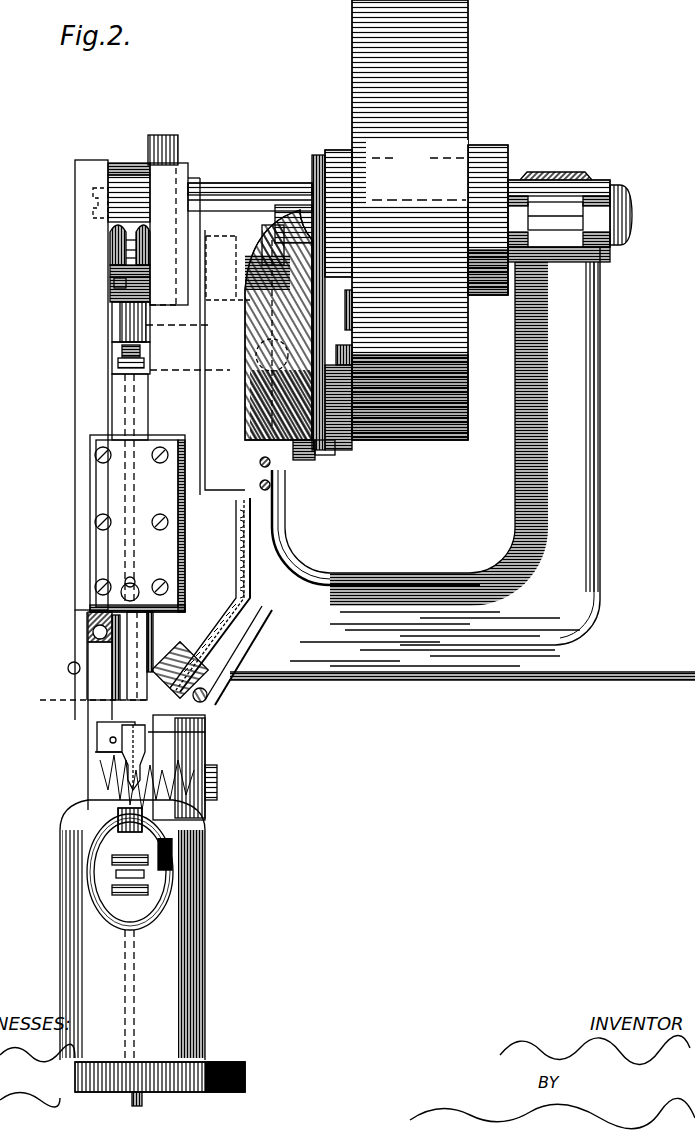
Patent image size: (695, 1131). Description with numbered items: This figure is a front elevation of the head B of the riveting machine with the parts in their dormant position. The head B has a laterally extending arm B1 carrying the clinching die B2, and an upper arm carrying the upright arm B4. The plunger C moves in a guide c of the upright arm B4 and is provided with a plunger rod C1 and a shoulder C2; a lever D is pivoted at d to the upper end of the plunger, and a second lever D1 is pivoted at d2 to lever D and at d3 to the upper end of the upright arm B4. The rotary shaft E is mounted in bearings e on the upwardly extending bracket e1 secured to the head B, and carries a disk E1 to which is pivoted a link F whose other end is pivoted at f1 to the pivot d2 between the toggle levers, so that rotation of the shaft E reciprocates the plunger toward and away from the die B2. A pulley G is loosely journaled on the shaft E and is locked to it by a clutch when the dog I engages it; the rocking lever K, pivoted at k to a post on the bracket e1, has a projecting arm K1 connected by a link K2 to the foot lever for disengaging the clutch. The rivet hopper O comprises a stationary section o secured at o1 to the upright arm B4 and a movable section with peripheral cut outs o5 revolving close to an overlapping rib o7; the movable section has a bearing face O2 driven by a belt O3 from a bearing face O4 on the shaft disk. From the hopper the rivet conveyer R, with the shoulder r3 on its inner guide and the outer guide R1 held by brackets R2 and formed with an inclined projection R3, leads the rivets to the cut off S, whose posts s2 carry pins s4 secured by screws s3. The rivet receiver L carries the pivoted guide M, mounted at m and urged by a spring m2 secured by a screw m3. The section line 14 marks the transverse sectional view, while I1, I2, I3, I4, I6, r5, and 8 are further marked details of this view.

The pulley G is at (440, 182).
The bearings e is at (288, 184).
The rotary shaft E is at (626, 222).
The disk E1 is at (178, 135).
The bearing face O4 is at (316, 158).
The belt O3 is at (332, 152).
The rocking lever K is at (340, 262).
The projecting arm K1 is at (238, 308).
The link K2 is at (125, 492).
The upright arm B4 is at (88, 270).
The pivot d3 is at (100, 200).
The second lever D1 is at (120, 245).
The link F is at (110, 258).
The pivot f1 is at (115, 282).
The pivot d2 is at (140, 290).
The lever D is at (120, 325).
The pivot d is at (138, 365).
The plunger C is at (125, 415).
The guide c is at (112, 425).
The plate I1 is at (80, 605).
The rivet hopper O is at (300, 440).
The bearing face O2 is at (332, 440).
The securing point o1 is at (250, 245).
The cut outs o5 is at (250, 262).
The stationary section o is at (248, 282).
The overlapping rib o7 is at (250, 298).
The pivot k is at (245, 385).
The bracket e1 is at (290, 497).
The brackets R2 is at (290, 476).
The rivet conveyer R is at (250, 602).
The outer guide R1 is at (258, 630).
The inclined projection R3 is at (250, 658).
The shoulder r3 is at (248, 606).
The screws s3 is at (268, 682).
The shoulder C2 is at (150, 640).
The plunger rod C1 is at (152, 650).
The cut off S is at (180, 670).
The pin I3 is at (92, 635).
The screw m3 is at (68, 668).
The section line 14 is at (89, 693).
The dog I is at (88, 698).
The spring m2 is at (85, 706).
The pivot m is at (90, 710).
The guide M is at (97, 728).
The holder I2 is at (110, 740).
The nozzle I6 is at (122, 758).
The pin 8 is at (106, 718).
The rivet receiver L is at (150, 740).
The pin r5 is at (150, 718).
The posts s2 is at (208, 694).
The projecting pins s4 is at (205, 712).
The arm I4 is at (178, 728).
The head B is at (205, 945).
The laterally extending arm B1 is at (165, 870).
The clinching die B2 is at (122, 815).